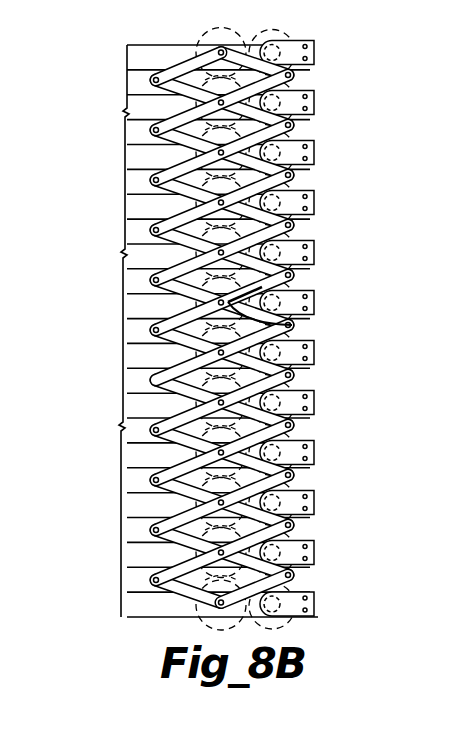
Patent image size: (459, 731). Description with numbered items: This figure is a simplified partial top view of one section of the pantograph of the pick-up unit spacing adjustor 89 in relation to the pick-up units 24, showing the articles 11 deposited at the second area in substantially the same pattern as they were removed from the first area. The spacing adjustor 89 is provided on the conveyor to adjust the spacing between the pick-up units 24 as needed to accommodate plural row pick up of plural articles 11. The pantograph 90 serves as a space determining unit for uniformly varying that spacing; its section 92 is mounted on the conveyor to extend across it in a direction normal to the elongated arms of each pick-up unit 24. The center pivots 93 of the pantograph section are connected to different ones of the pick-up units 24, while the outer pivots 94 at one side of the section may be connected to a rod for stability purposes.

The articles 11 is at (325, 107).
The pick-up units 24 is at (315, 152).
The pick-up unit spacing adjustor 89 is at (175, 172).
The pantograph 90 is at (262, 287).
The section 92 is at (175, 266).
The center pivots 93 is at (292, 323).
The outer pivots 94 is at (158, 374).